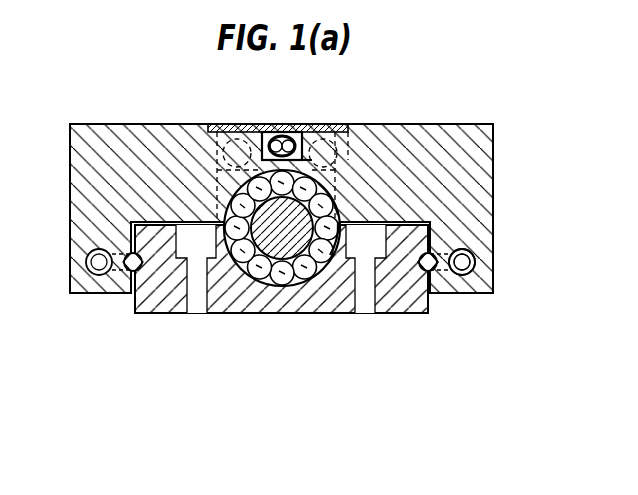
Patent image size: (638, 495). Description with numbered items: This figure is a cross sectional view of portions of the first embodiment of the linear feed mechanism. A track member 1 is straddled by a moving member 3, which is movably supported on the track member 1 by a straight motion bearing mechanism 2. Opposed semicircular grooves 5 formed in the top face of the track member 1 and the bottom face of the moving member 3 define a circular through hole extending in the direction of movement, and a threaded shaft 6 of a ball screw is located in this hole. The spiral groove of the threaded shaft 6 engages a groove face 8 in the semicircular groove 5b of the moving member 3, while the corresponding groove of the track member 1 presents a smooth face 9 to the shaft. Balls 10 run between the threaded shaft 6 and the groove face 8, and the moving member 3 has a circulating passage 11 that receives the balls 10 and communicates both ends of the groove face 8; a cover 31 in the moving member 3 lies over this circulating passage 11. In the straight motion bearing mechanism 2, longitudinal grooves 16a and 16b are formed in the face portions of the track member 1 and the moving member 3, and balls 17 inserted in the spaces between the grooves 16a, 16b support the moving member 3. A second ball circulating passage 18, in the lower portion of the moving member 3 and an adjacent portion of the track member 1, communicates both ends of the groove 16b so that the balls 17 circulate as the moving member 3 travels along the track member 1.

The track member 1 is at (165, 300).
The straight motion bearing mechanism 2 is at (123, 283).
The moving member 3 is at (486, 205).
The semicircular grooves 5 is at (311, 284).
The semicircular groove 5b is at (328, 179).
The threaded shaft 6 is at (238, 192).
The groove face 8 is at (331, 212).
The smooth face 9 is at (285, 273).
The balls 10 is at (250, 283).
The circulating passage 11 is at (285, 132).
The groove 16a is at (407, 285).
The groove 16b is at (443, 244).
The balls 17 is at (437, 278).
The ball circulating passage 18 is at (477, 256).
The cover 31 is at (233, 125).